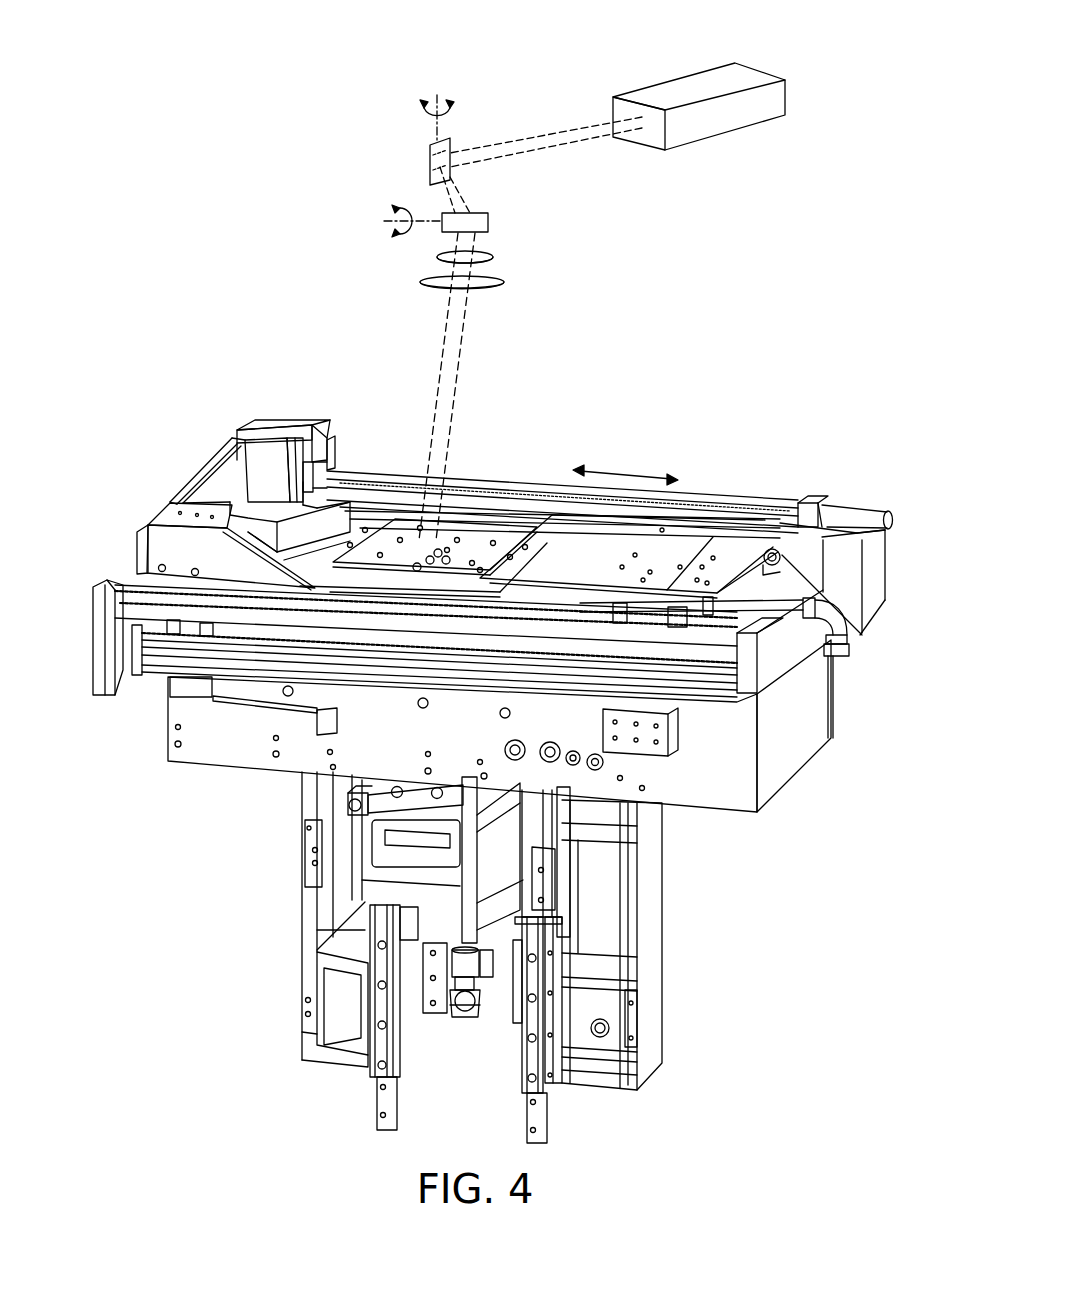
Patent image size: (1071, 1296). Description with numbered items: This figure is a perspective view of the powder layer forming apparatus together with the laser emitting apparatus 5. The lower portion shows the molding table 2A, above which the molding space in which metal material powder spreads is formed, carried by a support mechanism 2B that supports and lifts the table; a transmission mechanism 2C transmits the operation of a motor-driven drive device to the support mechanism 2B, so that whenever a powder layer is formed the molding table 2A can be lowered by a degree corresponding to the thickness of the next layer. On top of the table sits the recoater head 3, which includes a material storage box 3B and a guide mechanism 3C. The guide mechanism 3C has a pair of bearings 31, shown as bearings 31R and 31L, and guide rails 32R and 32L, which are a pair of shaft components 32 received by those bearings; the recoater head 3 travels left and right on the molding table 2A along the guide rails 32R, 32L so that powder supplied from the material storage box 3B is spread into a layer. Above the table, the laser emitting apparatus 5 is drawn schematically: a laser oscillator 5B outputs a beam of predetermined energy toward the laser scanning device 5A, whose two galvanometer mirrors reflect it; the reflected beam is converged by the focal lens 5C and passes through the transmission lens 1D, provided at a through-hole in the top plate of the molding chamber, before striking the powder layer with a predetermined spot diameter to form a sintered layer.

The laser emitting apparatus 5 is at (492, 81).
The laser scanning device 5A is at (428, 186).
The laser oscillator 5B is at (726, 127).
The focal lens 5C is at (491, 253).
The transmission lens 1D is at (506, 283).
The molding table 2A is at (455, 527).
The support mechanism 2B is at (654, 942).
The transmission mechanism 2C is at (483, 1007).
The recoater head 3 is at (225, 458).
The material storage box 3B is at (237, 467).
The guide mechanism 3C is at (338, 450).
The bearings 31 is at (197, 417).
The left bearing 31L is at (247, 507).
The right bearing 31R is at (330, 455).
The shaft components 32 is at (546, 510).
The left guide rail 32L is at (497, 587).
The right guide rail 32R is at (713, 503).